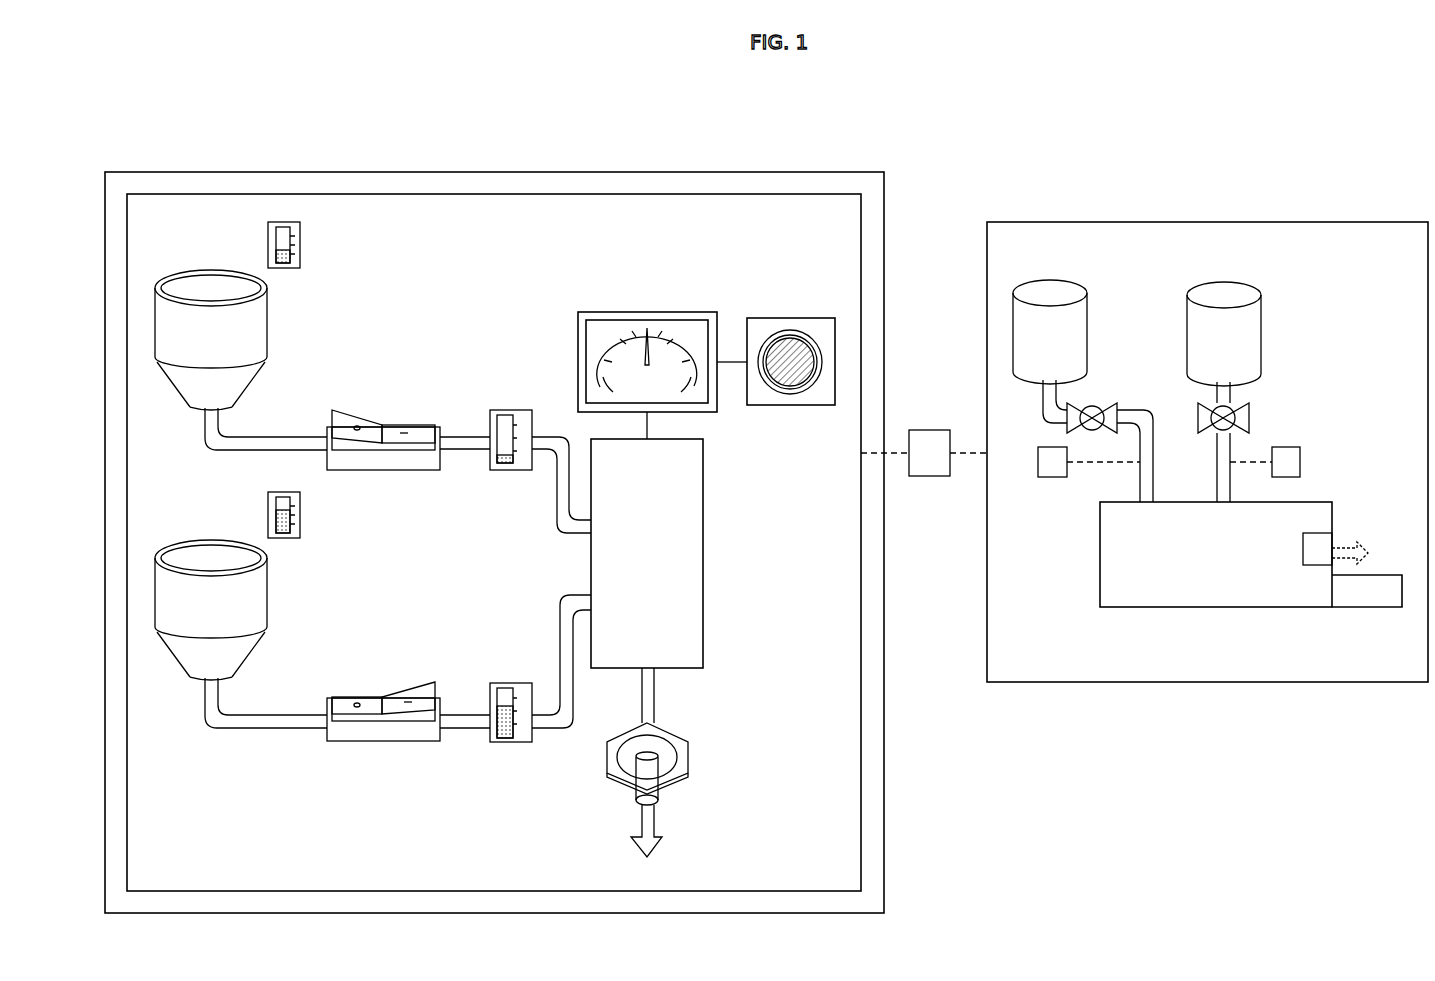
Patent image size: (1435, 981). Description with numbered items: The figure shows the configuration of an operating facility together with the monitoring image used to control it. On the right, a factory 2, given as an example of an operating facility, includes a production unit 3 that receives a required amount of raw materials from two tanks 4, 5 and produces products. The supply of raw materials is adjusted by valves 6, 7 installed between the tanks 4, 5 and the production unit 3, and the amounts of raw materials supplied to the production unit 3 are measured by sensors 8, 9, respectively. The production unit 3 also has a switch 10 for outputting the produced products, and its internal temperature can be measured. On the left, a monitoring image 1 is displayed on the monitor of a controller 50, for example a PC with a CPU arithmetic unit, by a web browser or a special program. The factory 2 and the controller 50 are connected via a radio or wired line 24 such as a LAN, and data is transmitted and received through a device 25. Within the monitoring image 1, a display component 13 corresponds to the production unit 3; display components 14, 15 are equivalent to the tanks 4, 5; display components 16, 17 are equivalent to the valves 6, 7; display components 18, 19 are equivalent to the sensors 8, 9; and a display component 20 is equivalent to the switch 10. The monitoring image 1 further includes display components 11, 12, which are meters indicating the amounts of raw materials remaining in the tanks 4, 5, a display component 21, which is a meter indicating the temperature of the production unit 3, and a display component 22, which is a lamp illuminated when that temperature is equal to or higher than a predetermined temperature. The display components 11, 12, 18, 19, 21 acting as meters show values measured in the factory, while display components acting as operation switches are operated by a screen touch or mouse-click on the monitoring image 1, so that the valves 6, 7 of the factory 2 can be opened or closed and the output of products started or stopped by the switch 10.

The monitoring image 1 is at (782, 210).
The factory 2 is at (1330, 228).
The production unit 3 is at (1178, 607).
The tank 4 is at (1062, 292).
The tank 5 is at (1233, 292).
The valve 6 is at (1067, 422).
The valve 7 is at (1250, 415).
The sensor 8 is at (1037, 470).
The sensor 9 is at (1300, 470).
The switch 10 is at (1318, 537).
The display component 11 is at (300, 245).
The display component 12 is at (300, 518).
The display component 13 is at (703, 520).
The display component 14 is at (258, 317).
The display component 15 is at (258, 592).
The display component 16 is at (386, 425).
The display component 17 is at (388, 698).
The display component 18 is at (513, 410).
The display component 19 is at (508, 683).
The display component 20 is at (690, 752).
The display component 21 is at (688, 313).
The display component 22 is at (815, 320).
The radio or wired line 24 is at (897, 452).
The device 25 is at (930, 477).
The controller 50 is at (884, 768).